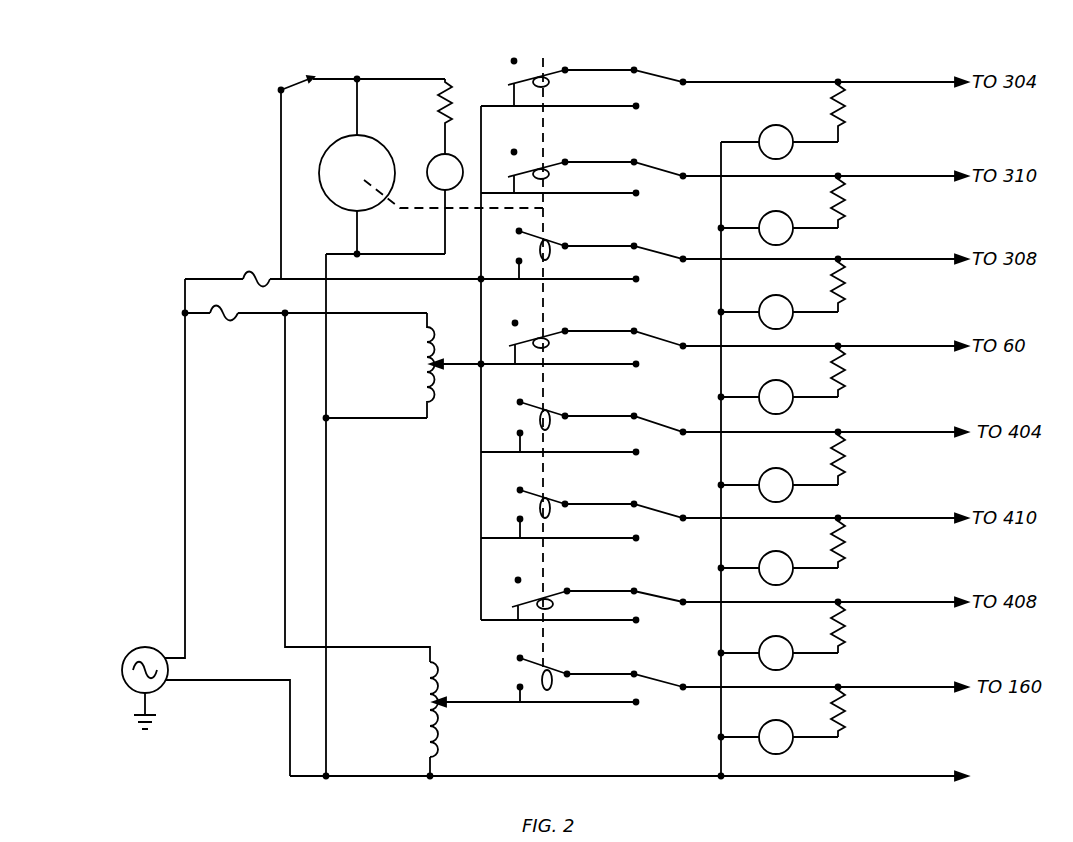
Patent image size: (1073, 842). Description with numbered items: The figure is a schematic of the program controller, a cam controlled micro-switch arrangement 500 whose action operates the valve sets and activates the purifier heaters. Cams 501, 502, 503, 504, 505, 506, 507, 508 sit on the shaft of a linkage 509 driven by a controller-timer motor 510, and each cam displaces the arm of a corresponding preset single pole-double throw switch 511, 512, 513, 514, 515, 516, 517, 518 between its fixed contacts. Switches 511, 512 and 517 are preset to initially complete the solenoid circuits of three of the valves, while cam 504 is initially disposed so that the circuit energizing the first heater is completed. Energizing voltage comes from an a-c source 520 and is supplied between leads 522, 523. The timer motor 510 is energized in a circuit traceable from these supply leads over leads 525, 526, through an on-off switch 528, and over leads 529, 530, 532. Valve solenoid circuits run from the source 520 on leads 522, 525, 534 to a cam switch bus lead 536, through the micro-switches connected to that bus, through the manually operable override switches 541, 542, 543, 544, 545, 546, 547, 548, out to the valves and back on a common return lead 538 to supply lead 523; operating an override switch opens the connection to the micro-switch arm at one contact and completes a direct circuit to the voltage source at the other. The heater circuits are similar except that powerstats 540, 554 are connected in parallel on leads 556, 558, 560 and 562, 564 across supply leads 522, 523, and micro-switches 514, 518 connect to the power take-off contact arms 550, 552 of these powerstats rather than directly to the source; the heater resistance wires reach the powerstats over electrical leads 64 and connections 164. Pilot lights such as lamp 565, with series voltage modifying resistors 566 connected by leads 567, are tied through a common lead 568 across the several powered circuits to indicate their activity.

The cam controlled micro-switch arrangement 500 is at (228, 203).
The cam 501 is at (550, 83).
The cam 502 is at (552, 173).
The cam 503 is at (551, 253).
The cam 504 is at (551, 345).
The cam 505 is at (551, 424).
The cam 506 is at (552, 512).
The cam 507 is at (555, 604).
The cam 508 is at (554, 682).
The linkage 509 is at (427, 209).
The controller-timer motor 510 is at (338, 195).
The single pole-double throw switch 511 is at (541, 75).
The single pole-double throw switch 512 is at (549, 162).
The single pole-double throw switch 513 is at (552, 243).
The single pole-double throw switch 514 is at (550, 329).
The single pole-double throw switch 515 is at (553, 412).
The single pole-double throw switch 516 is at (553, 500).
The single pole-double throw switch 517 is at (553, 590).
The single pole-double throw switch 518 is at (553, 672).
The a-c source 520 is at (148, 655).
The lead 522 is at (183, 450).
The lead 523 is at (246, 680).
The lead 525 is at (210, 279).
The lead 526 is at (281, 158).
The on-off switch 528 is at (304, 83).
The lead 529 is at (331, 77).
The lead 530 is at (357, 110).
The lead 532 is at (326, 507).
The lead 534 is at (432, 281).
The cam switch bus lead 536 is at (481, 499).
The common return lead 538 is at (616, 776).
The powerstat 540 is at (418, 370).
The override switch 541 is at (662, 77).
The override switch 542 is at (661, 171).
The override switch 543 is at (660, 255).
The override switch 544 is at (661, 340).
The override switch 545 is at (661, 426).
The override switch 546 is at (663, 512).
The override switch 547 is at (663, 599).
The override switch 548 is at (663, 685).
The power take-off contact arm 550 is at (460, 362).
The power take-off contact arm 552 is at (476, 704).
The powerstat 554 is at (425, 705).
The lead 556 is at (262, 314).
The lead 558 is at (375, 314).
The lead 560 is at (377, 420).
The lead 562 is at (283, 450).
The lead 564 is at (434, 768).
The lamp 565 is at (777, 135).
The resistor 566 is at (845, 112).
The lead 567 is at (813, 147).
The common lead 568 is at (735, 140).
The electrical leads 64 is at (925, 348).
The connections 164 is at (933, 687).